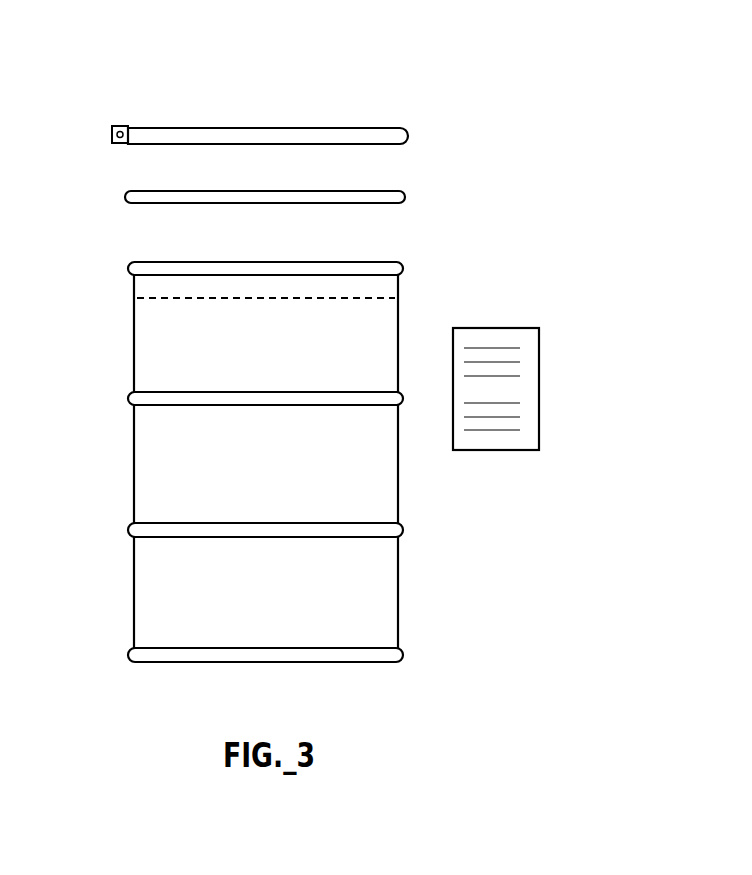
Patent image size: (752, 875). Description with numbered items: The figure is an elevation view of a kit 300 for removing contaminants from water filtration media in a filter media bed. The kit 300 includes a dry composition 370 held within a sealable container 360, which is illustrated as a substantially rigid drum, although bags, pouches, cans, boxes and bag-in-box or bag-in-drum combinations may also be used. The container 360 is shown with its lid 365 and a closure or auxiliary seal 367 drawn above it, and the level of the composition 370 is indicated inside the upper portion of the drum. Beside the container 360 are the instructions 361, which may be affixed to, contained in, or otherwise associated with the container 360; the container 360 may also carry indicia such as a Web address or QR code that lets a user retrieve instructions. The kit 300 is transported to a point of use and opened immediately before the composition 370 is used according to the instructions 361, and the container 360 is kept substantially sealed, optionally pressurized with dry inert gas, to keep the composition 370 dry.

The kit 300 is at (568, 80).
The sealable container 360 is at (132, 460).
The instructions 361 is at (403, 263).
The lid 365 is at (125, 195).
The closure or auxiliary seal 367 is at (175, 127).
The dry composition 370 is at (155, 298).